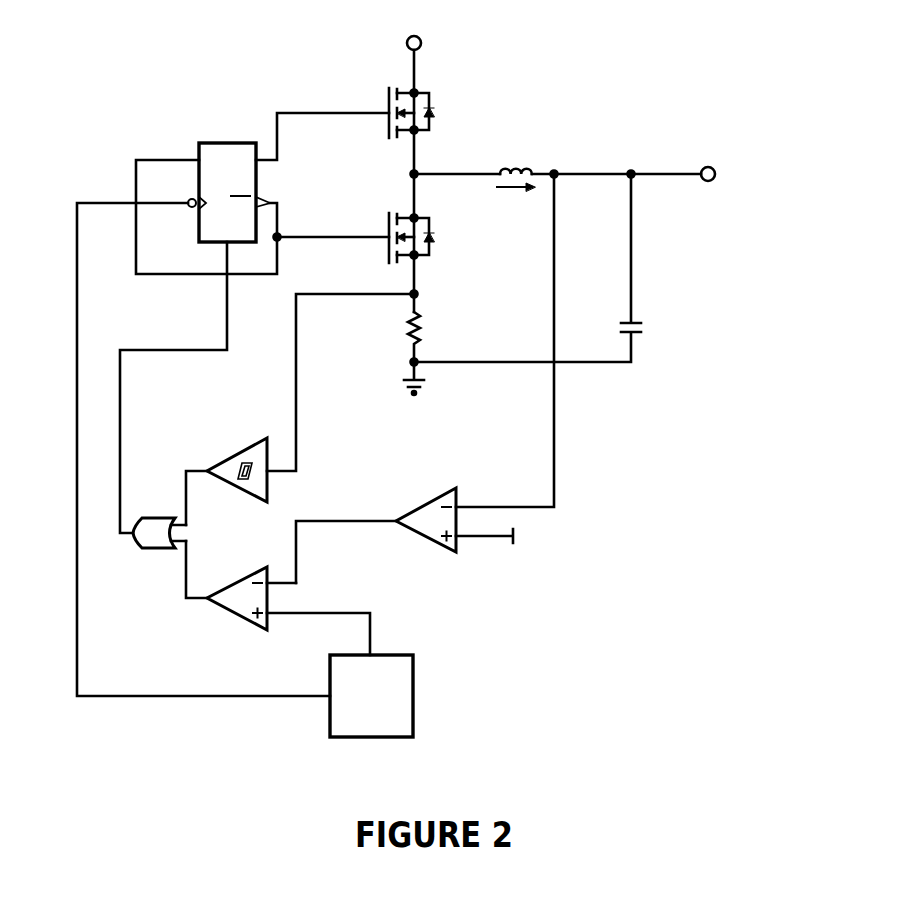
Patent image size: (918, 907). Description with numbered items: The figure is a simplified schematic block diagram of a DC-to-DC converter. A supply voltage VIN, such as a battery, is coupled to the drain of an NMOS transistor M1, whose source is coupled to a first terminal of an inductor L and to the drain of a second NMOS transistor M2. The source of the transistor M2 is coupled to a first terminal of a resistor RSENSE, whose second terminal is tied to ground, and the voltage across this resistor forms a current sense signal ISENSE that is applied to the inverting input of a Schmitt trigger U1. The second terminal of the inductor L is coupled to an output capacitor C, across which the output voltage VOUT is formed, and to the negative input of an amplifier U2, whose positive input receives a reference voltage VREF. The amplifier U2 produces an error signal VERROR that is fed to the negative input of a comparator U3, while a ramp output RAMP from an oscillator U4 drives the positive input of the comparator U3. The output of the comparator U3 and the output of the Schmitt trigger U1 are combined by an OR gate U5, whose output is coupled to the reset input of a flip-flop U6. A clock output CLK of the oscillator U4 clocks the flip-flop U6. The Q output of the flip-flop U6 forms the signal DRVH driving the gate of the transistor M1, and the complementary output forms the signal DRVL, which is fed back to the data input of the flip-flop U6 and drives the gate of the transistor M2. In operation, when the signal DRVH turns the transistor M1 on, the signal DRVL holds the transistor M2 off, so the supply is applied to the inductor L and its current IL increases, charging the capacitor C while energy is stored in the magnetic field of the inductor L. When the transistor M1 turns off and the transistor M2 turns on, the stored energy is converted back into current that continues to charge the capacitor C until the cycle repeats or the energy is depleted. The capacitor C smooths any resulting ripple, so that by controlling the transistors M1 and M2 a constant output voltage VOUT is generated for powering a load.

The Schmitt trigger U1 is at (237, 458).
The amplifier U2 is at (426, 510).
The comparator U3 is at (249, 593).
The oscillator U4 is at (376, 680).
The OR gate U5 is at (158, 513).
The flip-flop U6 is at (229, 176).
The NMOS transistor M1 is at (433, 113).
The NMOS transistor M2 is at (433, 238).
The inductor L is at (557, 156).
The output capacitor C is at (542, 268).
The resistor RSENSE is at (461, 337).
The supply voltage VIN is at (388, 61).
The output voltage VOUT is at (743, 175).
The reference voltage VREF is at (514, 538).
The inductor current IL is at (516, 201).
The signal DRVH is at (322, 120).
The signal DRVL is at (262, 217).
The signal Isense ISENSE is at (340, 368).
The signal Verror VERROR is at (346, 536).
The ramp output RAMP is at (318, 620).
The clock output CLK is at (203, 449).